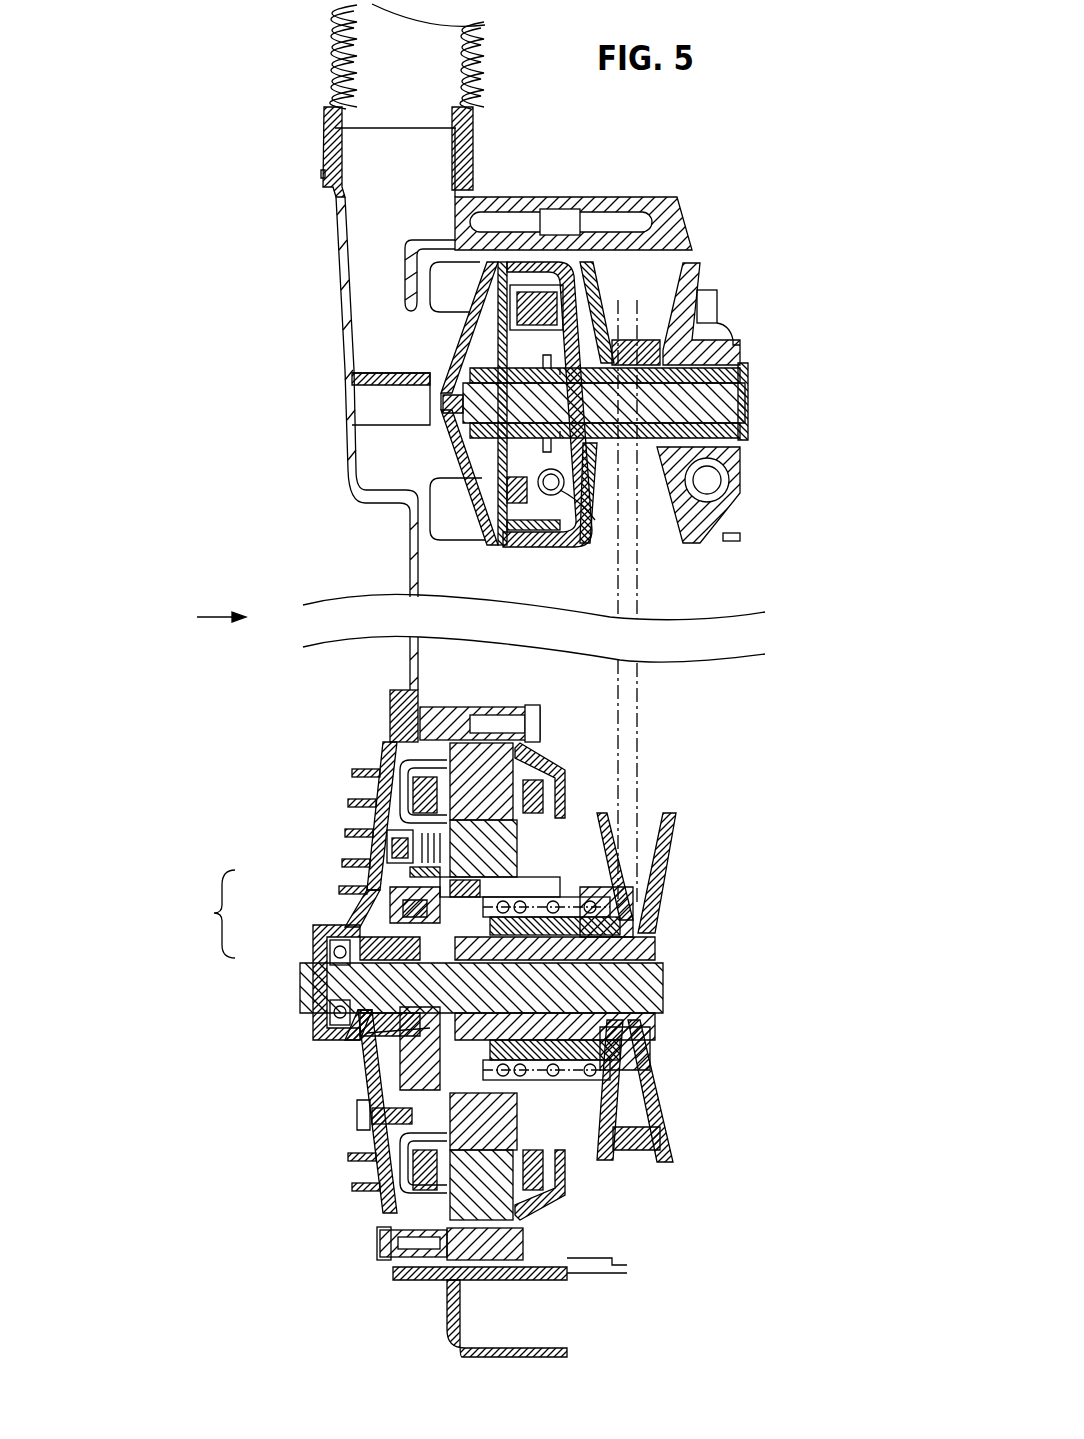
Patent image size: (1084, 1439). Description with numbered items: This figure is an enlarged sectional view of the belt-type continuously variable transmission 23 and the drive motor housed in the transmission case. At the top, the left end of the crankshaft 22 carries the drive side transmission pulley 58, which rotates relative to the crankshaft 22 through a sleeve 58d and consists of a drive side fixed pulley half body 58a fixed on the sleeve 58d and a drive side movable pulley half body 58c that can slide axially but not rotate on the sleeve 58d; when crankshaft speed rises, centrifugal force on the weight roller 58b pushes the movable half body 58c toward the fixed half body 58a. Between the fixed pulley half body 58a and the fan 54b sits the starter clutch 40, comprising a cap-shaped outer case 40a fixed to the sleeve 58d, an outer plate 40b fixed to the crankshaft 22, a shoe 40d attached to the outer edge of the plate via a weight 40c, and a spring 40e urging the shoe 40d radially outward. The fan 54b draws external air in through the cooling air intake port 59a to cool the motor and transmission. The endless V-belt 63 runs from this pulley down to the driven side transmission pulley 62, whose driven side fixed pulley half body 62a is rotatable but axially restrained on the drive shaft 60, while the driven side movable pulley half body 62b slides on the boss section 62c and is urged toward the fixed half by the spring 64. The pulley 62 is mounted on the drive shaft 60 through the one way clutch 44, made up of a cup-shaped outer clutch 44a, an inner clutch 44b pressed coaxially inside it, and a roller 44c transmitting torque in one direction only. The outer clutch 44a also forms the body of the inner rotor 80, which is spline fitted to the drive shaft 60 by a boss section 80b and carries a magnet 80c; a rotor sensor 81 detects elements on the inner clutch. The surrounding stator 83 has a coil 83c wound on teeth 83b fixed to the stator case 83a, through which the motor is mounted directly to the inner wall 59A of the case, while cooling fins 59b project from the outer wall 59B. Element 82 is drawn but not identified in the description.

The crankshaft 22 is at (735, 412).
The continuously variable transmission 23 is at (662, 602).
The starter clutch 40 is at (527, 240).
The outer case 40a is at (583, 535).
The outer plate 40b is at (470, 450).
The weight 40c is at (520, 548).
The shoe 40d is at (543, 547).
The spring 40e is at (560, 490).
The one way clutch 44 is at (314, 954).
The outer clutch 44a is at (390, 892).
The inner clutch 44b is at (338, 955).
The roller 44c is at (382, 922).
The fan 54b is at (442, 316).
The drive side transmission pulley 58 is at (698, 246).
The drive side fixed pulley half body 58a is at (592, 290).
The weight roller 58b is at (715, 488).
The drive side movable pulley half body 58c is at (702, 280).
The sleeve 58d is at (750, 388).
The cooling air intake port 59a is at (397, 142).
The inner wall 59A is at (385, 748).
The outer wall 59B is at (375, 1140).
The cooling fins 59b is at (352, 773).
The drive shaft 60 is at (655, 985).
The driven side transmission pulley 62 is at (683, 790).
The driven side fixed pulley half body 62a is at (675, 818).
The driven side movable pulley half body 62b is at (605, 815).
The boss section 62c is at (628, 948).
The endless V-belt 63 is at (640, 690).
The spring 64 is at (563, 898).
The inner rotor 80 is at (355, 1036).
The boss section 80b is at (430, 1030).
The magnet 80c is at (510, 1120).
The rotor sensor 81 is at (382, 845).
The permanent magnet 82 is at (372, 872).
The stator 83 is at (423, 1275).
The stator case 83a is at (520, 1280).
The teeth 83b is at (455, 1318).
The coil 83c is at (557, 1187).